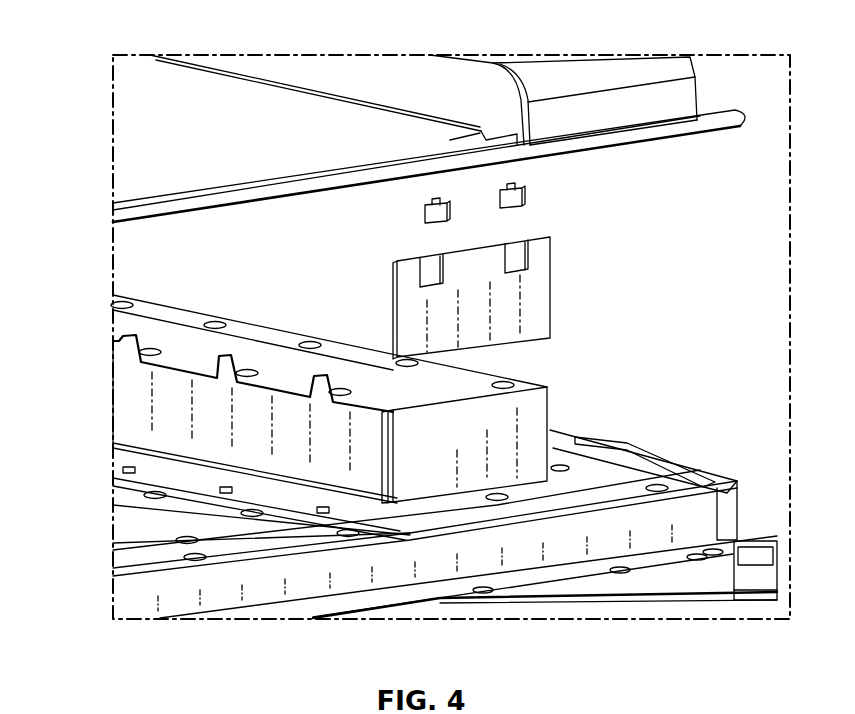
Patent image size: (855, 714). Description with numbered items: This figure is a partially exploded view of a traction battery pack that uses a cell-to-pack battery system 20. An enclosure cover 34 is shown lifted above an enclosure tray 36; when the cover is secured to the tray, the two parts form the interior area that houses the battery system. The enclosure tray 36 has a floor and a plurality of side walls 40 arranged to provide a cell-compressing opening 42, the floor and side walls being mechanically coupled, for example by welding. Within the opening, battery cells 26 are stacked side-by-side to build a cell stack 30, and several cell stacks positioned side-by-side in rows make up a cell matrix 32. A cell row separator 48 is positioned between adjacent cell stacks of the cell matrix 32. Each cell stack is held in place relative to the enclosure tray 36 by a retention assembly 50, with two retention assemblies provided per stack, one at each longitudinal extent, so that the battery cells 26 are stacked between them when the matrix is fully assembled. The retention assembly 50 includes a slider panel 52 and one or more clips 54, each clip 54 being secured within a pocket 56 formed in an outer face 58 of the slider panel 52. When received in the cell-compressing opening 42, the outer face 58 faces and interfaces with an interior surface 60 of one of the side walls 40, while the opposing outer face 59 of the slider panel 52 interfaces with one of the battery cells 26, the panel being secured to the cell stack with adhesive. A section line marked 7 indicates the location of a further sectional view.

The cell-to-pack battery system 20 is at (102, 325).
The battery cell 26 is at (517, 383).
The cell stack 30 is at (265, 314).
The cell matrix 32 is at (118, 528).
The enclosure cover 34 is at (205, 82).
The enclosure tray 36 is at (680, 465).
The side wall 40 is at (357, 577).
The cell-compressing opening 42 is at (636, 460).
The cell row separator 48 is at (133, 412).
The retention assembly 50 is at (598, 175).
The slider panel 52 is at (413, 300).
The clip 54 is at (423, 219).
The pocket 56 is at (437, 262).
The outer face 58 is at (457, 297).
The opposing outer face 59 is at (385, 282).
The interior surface 60 is at (395, 527).
The section line 7 is at (302, 572).